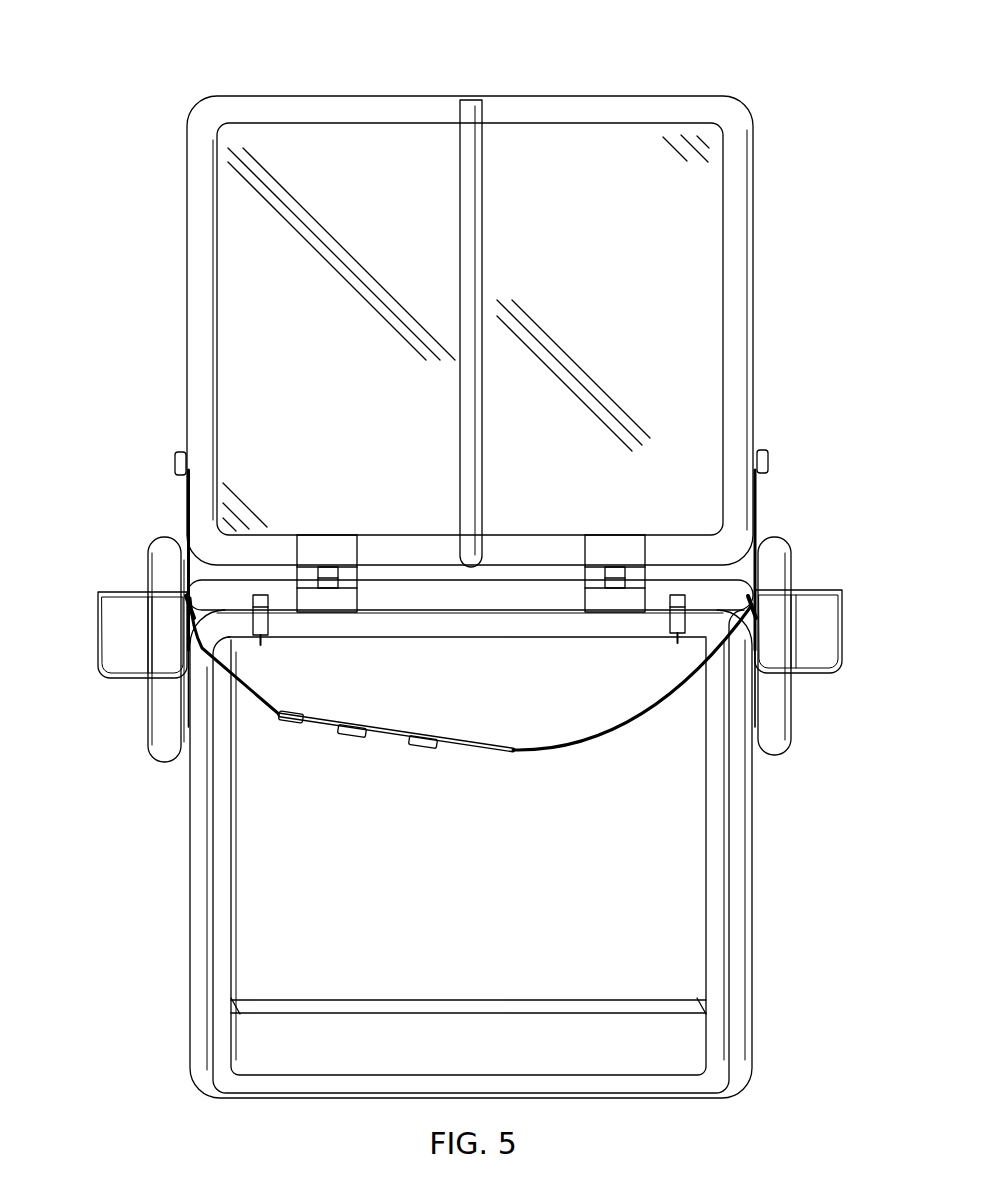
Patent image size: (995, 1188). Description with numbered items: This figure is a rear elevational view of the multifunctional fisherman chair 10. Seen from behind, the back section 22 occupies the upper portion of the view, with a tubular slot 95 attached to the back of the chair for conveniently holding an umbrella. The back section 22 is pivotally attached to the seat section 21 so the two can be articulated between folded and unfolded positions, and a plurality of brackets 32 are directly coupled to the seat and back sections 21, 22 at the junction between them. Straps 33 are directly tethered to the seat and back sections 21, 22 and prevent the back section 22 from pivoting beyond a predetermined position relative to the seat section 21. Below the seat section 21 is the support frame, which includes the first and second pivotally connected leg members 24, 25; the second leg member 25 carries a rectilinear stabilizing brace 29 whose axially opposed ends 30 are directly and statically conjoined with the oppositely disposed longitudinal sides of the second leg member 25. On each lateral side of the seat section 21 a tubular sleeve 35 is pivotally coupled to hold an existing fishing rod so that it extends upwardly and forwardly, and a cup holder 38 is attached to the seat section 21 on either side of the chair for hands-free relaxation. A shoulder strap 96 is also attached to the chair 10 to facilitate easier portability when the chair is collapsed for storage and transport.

The multifunctional fisherman chair 10 is at (137, 138).
The back section 22 is at (703, 232).
The tubular slot 95 is at (482, 232).
The brackets 32 is at (336, 550).
The seat section 21 is at (474, 597).
The first leg member 24 is at (742, 933).
The second leg member 25 is at (712, 843).
The stabilizing brace 29 is at (433, 1002).
The ends 30 is at (238, 1002).
The straps 33 is at (183, 517).
The tubular sleeves 35 is at (172, 748).
The cup holders 38 is at (128, 592).
The shoulder strap 96 is at (442, 743).